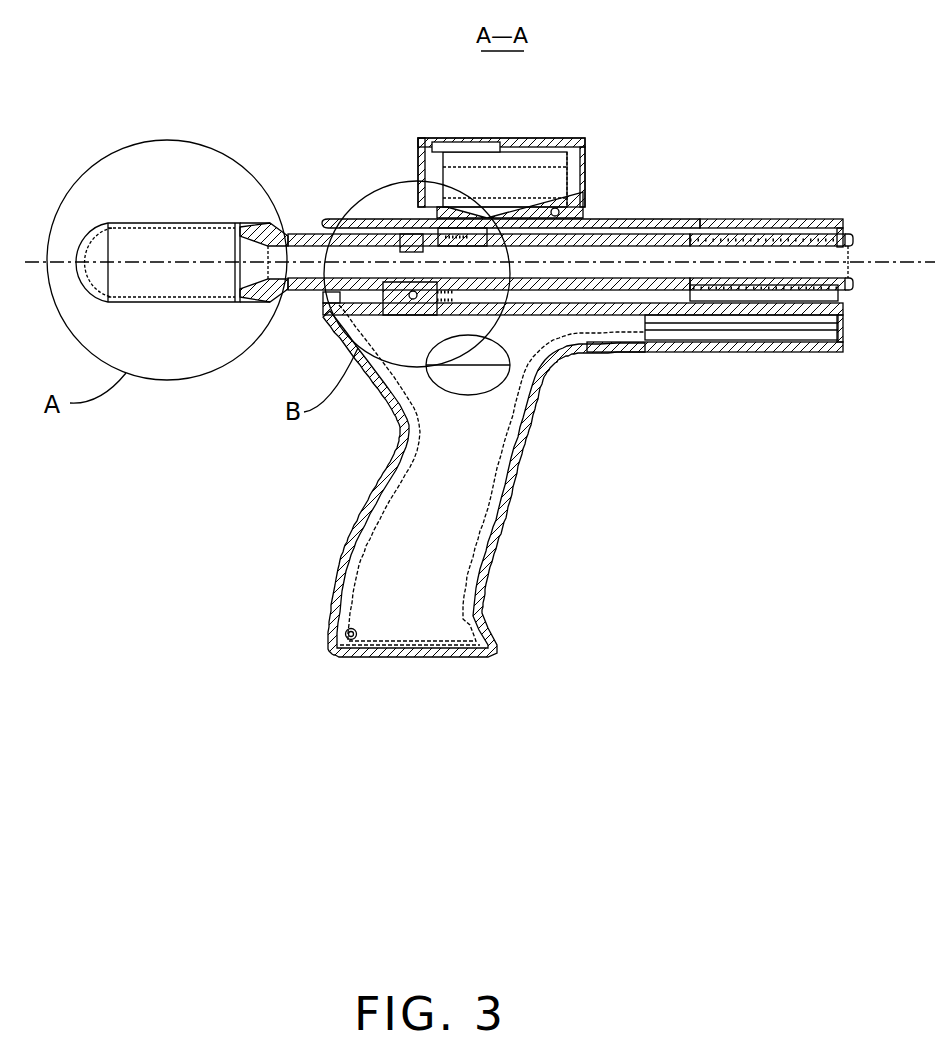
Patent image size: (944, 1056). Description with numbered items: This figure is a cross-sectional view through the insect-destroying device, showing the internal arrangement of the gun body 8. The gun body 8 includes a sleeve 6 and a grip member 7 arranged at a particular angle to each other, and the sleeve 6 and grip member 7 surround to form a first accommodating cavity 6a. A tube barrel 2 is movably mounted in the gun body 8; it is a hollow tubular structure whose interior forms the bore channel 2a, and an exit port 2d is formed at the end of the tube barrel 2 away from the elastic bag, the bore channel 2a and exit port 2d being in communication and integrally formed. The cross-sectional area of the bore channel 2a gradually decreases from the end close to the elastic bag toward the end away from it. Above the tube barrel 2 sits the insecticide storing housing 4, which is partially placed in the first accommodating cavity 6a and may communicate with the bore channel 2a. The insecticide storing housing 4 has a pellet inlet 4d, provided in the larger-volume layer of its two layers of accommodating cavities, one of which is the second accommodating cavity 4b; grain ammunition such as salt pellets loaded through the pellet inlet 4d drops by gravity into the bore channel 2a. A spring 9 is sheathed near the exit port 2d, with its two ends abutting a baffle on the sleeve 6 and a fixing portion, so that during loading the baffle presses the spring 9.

The tube barrel 2 is at (704, 243).
The bore channel 2a is at (774, 251).
The exit port 2d is at (853, 255).
The insecticide storing housing 4 is at (497, 140).
The second accommodating cavity 4b is at (545, 156).
The pellet inlet 4d is at (518, 140).
The sleeve 6 is at (628, 220).
The first accommodating cavity 6a is at (733, 223).
The grip member 7 is at (498, 500).
The gun body 8 is at (665, 348).
The spring 9 is at (742, 292).